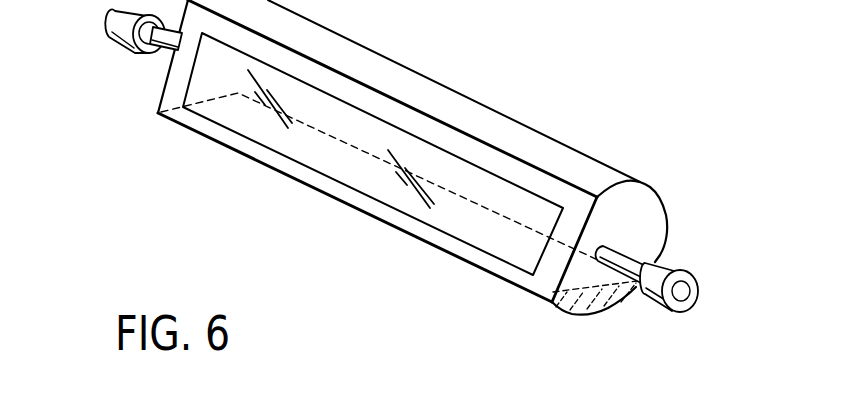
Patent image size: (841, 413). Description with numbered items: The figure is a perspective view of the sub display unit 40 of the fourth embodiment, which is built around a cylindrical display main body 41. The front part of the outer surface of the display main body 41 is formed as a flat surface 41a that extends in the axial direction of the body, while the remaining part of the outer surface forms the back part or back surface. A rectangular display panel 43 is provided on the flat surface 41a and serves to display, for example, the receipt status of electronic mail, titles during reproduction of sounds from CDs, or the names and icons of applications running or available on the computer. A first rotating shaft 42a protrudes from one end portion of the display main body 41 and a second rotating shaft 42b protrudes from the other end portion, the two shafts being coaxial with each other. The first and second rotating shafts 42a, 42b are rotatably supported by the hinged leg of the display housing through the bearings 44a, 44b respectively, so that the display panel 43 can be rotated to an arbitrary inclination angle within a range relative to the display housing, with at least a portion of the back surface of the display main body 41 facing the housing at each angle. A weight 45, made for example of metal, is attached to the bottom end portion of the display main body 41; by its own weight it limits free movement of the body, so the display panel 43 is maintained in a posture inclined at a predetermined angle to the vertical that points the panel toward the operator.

The sub display unit 40 is at (383, 189).
The display main body 41 is at (412, 189).
The flat surface 41a is at (409, 118).
The first rotating shaft 42a is at (648, 263).
The second rotating shaft 42b is at (158, 52).
The display panel 43 is at (453, 222).
The bearing 44a is at (657, 304).
The bearing 44b is at (115, 36).
The weight 45 is at (587, 312).